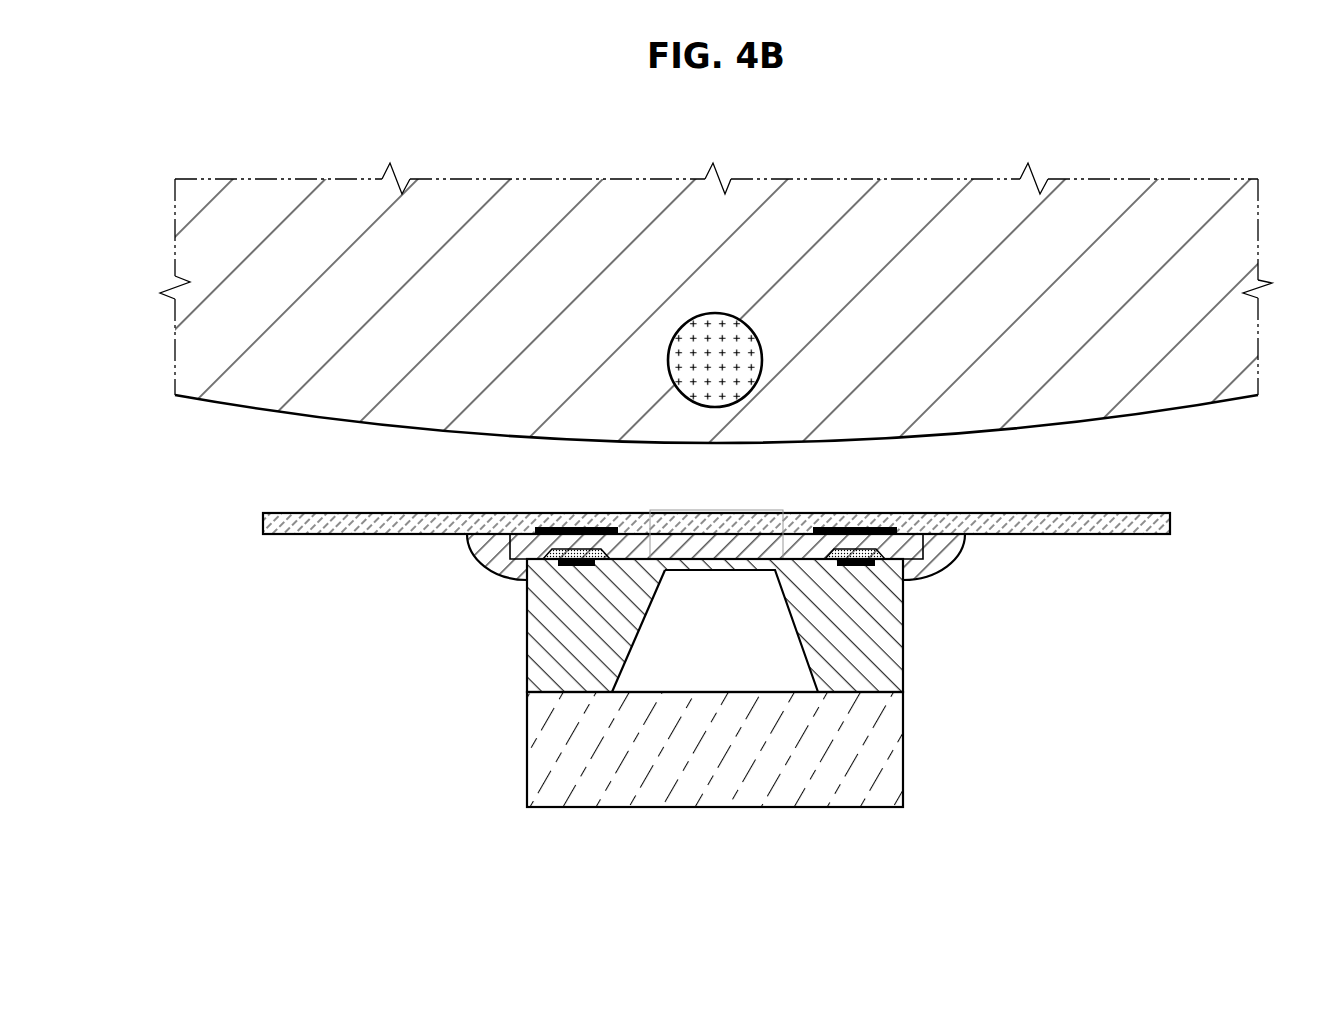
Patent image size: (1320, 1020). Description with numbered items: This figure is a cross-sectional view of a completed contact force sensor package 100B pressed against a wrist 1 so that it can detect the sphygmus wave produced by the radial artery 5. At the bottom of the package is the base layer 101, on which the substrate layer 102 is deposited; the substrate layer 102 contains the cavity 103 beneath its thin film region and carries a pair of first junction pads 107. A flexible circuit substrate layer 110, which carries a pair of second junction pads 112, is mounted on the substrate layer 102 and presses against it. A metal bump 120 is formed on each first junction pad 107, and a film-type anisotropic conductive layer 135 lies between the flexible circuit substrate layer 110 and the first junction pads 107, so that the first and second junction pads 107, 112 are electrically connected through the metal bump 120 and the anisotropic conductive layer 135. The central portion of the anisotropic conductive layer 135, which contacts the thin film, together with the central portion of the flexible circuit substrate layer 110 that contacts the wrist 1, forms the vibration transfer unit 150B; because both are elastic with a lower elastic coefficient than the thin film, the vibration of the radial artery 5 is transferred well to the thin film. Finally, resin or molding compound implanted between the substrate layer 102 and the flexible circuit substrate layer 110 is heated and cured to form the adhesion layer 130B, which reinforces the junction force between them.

The wrist 1 is at (1173, 406).
The radial artery 5 is at (748, 345).
The contact force sensor package 100B is at (276, 486).
The flexible circuit substrate layer 110 is at (1172, 524).
The second junction pads 112 is at (563, 528).
The metal bump 120 is at (550, 553).
The adhesion layer 130B is at (477, 552).
The anisotropic conductive layer 135 is at (683, 543).
The vibration transfer unit 150B is at (760, 512).
The first junction pads 107 is at (560, 567).
The substrate layer 102 is at (537, 665).
The cavity 103 is at (640, 697).
The base layer 101 is at (905, 757).